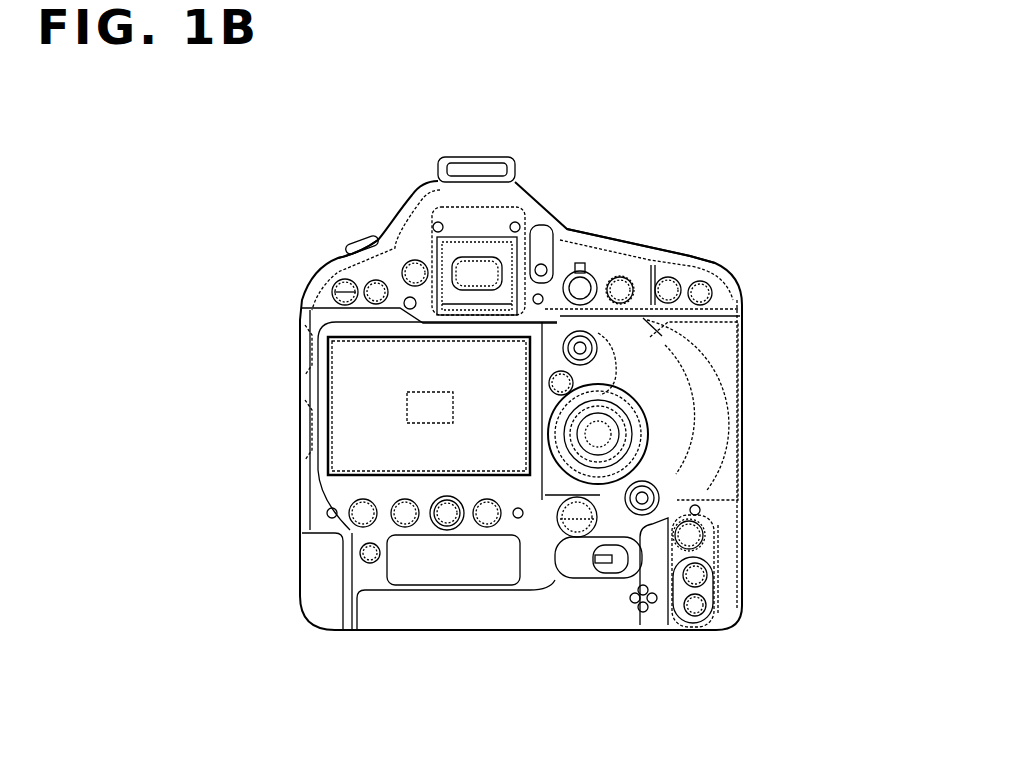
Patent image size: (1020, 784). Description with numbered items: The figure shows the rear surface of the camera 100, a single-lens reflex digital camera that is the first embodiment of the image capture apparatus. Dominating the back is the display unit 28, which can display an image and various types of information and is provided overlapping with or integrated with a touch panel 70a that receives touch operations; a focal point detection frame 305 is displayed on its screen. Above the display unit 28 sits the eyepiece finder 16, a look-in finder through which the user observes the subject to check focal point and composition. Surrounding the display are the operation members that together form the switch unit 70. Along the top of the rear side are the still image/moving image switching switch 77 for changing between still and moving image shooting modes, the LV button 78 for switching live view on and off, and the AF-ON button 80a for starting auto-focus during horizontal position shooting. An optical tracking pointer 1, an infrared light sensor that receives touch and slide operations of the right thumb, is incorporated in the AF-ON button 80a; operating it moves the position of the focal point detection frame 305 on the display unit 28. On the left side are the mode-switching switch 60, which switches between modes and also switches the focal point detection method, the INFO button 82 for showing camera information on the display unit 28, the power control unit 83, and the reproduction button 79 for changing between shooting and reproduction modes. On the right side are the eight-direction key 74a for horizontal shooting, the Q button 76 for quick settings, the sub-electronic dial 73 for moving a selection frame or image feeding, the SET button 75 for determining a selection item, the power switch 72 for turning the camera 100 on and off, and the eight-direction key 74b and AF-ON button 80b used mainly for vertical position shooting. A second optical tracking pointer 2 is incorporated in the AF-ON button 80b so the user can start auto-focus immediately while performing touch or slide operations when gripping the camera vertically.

The camera 100 is at (346, 175).
The switch unit 70 is at (542, 90).
The eyepiece finder 16 is at (480, 267).
The still image/moving image switching switch 77 is at (580, 287).
The LV button 78 is at (622, 283).
The AF-ON button 80a is at (630, 278).
The optical tracking pointer 1 is at (700, 247).
The mode-switching switch 60 is at (365, 230).
The INFO button 82 is at (375, 287).
The power control unit 83 is at (345, 292).
The reproduction button 79 is at (352, 518).
The eight-direction key 74a is at (597, 348).
The Q button 76 is at (570, 378).
The sub-electronic dial 73 is at (633, 398).
The SET button 75 is at (600, 433).
The power switch 72 is at (590, 510).
The eight-direction key 74b is at (658, 497).
The AF-ON button 80b is at (700, 533).
The optical tracking pointer 2 is at (687, 537).
The focal point detection frame 305 is at (424, 415).
The display unit 28 is at (498, 437).
The touch panel 70a is at (429, 406).